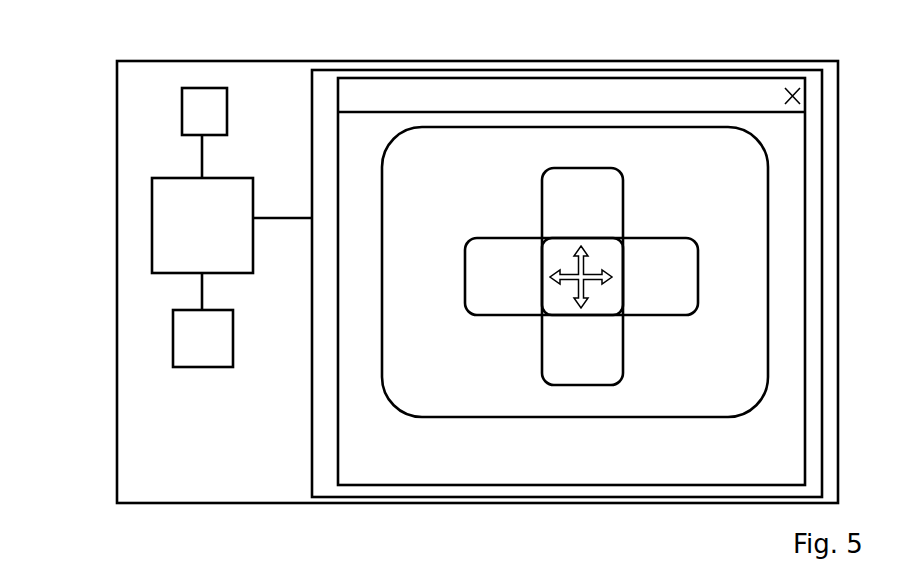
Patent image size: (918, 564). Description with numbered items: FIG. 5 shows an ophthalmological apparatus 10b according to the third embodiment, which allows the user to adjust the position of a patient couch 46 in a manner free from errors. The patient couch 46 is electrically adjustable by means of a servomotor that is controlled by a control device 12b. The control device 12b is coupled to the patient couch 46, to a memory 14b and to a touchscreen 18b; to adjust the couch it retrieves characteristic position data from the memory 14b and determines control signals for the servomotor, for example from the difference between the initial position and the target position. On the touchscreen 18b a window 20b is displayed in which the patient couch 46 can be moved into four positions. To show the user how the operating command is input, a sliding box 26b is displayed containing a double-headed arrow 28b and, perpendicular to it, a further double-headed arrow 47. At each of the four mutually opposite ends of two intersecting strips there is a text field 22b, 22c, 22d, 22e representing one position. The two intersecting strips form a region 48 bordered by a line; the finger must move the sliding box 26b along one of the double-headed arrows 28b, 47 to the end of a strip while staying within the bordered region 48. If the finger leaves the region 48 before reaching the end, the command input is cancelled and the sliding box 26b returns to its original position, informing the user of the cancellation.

The ophthalmological apparatus 10b is at (575, 57).
The control device 12b is at (152, 250).
The memory 14b is at (182, 123).
The touchscreen 18b is at (312, 123).
The graphical user interface window 20b is at (338, 160).
The text field 22b is at (400, 288).
The text field 22c is at (733, 294).
The text field 22d is at (548, 156).
The text field 22e is at (615, 397).
The sliding box 26b is at (627, 268).
The double-headed arrow 28b is at (605, 265).
The patient couch 46 is at (173, 335).
The further double-headed arrow 47 is at (581, 240).
The region 48 is at (698, 248).